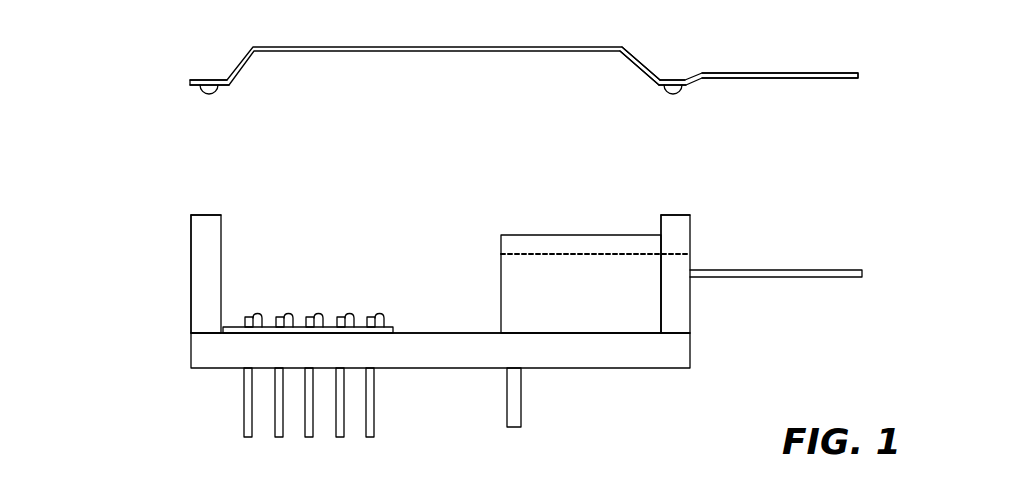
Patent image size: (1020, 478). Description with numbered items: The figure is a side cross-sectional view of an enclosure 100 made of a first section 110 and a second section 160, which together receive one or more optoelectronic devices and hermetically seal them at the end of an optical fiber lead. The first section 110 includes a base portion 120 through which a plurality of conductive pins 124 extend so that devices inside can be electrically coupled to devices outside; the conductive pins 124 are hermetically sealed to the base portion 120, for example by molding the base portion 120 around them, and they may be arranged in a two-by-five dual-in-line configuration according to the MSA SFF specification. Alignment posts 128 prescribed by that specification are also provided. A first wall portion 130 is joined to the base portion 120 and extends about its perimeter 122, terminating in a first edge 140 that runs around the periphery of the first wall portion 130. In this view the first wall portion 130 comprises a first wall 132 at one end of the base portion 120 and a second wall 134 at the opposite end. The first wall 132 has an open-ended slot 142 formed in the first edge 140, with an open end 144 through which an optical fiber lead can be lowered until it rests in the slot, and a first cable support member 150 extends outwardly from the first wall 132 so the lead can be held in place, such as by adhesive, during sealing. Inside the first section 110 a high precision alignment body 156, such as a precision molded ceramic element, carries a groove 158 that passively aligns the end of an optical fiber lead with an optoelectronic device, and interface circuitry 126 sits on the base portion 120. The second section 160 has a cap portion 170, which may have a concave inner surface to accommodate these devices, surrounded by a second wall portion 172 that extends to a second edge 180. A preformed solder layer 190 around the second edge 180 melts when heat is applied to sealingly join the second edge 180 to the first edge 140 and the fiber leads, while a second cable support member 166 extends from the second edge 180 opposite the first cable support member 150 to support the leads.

The enclosure 100 is at (118, 48).
The first section 110 is at (122, 192).
The base portion 120 is at (418, 355).
The perimeter 122 is at (202, 332).
The conductive pins 124 is at (366, 428).
The interface circuitry 126 is at (392, 323).
The alignment posts 128 is at (521, 397).
The first wall portion 130 is at (190, 228).
The first wall 132 is at (678, 293).
The second wall 134 is at (205, 275).
The first edge 140 is at (205, 214).
The open-ended slot 142 is at (676, 235).
The open end 144 is at (668, 216).
The first cable support member 150 is at (760, 270).
The high precision alignment body 156 is at (500, 285).
The groove 158 is at (540, 246).
The second section 160 is at (126, 85).
The second cable support member 166 is at (767, 79).
The cap portion 170 is at (425, 45).
The second wall portion 172 is at (652, 70).
The second edge 180 is at (221, 87).
The preformed solder layer 190 is at (208, 93).